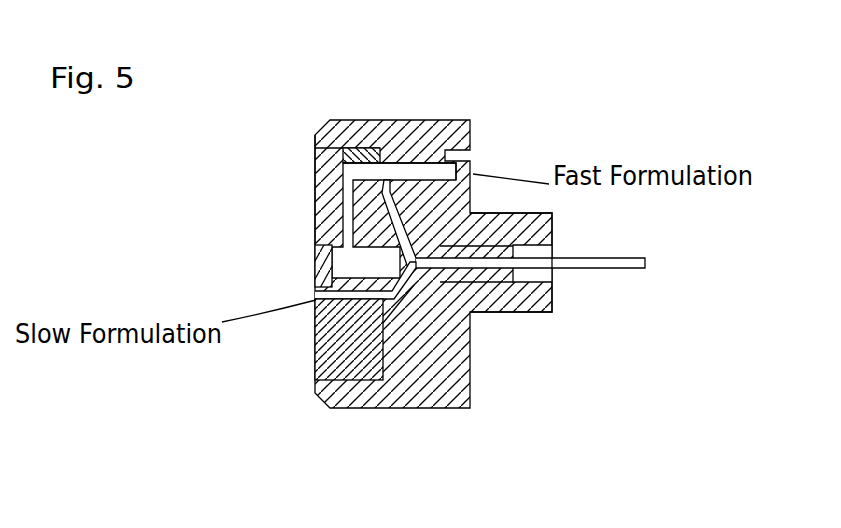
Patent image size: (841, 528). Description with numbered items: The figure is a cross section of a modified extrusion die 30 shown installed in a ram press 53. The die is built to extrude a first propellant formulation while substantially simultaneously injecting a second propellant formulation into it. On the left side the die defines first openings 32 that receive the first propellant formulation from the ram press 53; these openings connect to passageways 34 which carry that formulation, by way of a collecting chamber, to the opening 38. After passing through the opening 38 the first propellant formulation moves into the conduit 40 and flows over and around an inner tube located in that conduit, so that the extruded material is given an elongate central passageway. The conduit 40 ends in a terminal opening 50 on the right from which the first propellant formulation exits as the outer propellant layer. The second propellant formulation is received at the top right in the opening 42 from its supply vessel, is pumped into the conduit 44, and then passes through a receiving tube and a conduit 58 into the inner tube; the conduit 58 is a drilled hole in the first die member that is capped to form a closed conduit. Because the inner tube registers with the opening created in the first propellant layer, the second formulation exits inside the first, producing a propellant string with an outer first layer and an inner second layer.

The extrusion die 30 is at (420, 120).
The conduit 44 is at (392, 121).
The opening 42 is at (473, 152).
The conduit 58 is at (315, 176).
The conduit 40 is at (593, 257).
The terminal opening 50 is at (647, 262).
The first openings 32 is at (316, 292).
The passageways 34 is at (316, 325).
The opening 38 is at (512, 314).
The ram press 53 is at (407, 392).